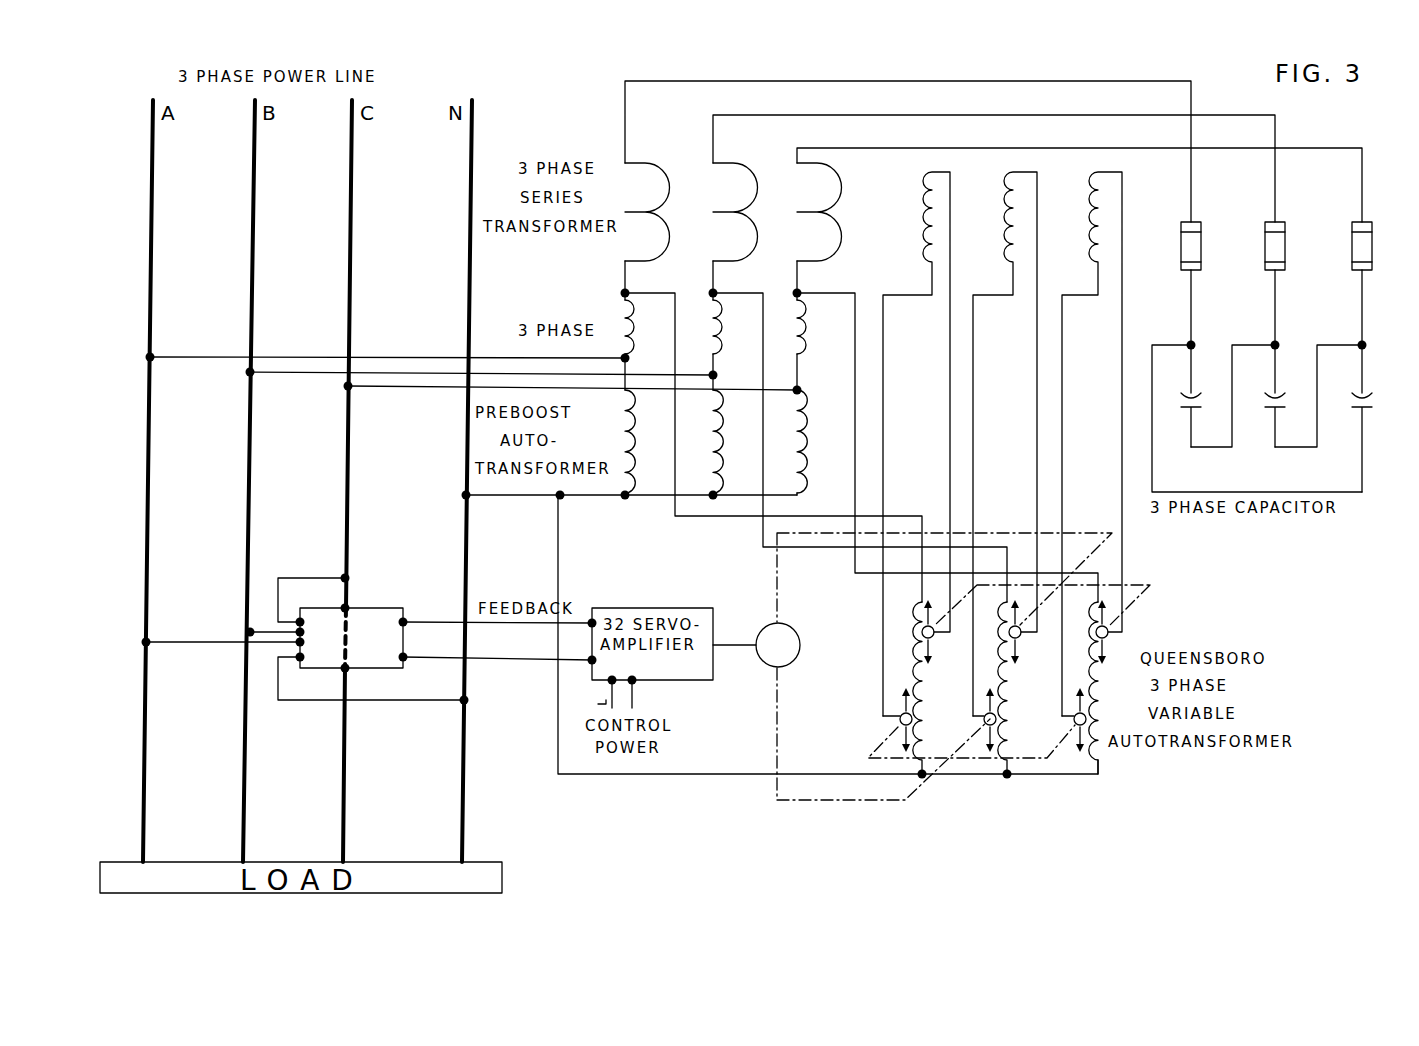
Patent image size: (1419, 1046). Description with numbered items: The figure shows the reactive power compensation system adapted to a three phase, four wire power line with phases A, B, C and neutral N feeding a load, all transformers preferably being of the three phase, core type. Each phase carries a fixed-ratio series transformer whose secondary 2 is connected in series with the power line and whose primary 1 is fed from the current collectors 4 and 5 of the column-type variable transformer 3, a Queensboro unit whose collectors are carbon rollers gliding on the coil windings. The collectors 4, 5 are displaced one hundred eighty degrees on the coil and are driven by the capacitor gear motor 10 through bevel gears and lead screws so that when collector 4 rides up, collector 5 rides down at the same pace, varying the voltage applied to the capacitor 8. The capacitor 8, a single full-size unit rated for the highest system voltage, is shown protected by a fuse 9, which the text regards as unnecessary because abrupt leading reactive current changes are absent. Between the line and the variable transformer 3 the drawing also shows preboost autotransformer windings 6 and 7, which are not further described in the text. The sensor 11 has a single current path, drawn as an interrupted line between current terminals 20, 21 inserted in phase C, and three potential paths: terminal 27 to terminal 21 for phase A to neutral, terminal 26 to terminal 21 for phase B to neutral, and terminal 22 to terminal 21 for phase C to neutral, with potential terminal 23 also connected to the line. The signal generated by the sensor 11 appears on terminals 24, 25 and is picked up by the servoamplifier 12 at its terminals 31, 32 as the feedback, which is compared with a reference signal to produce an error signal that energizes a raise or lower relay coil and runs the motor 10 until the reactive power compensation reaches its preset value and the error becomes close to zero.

The primary 1 is at (1002, 444).
The secondary 2 is at (737, 212).
The variable transformer 3 is at (992, 688).
The current collector 4 is at (1021, 632).
The current collector 5 is at (980, 720).
The preboost autotransformer winding 6 is at (704, 441).
The preboost autotransformer boost winding 7 is at (704, 327).
The capacitor 8 is at (1262, 417).
The fuse 9 is at (1281, 283).
The motor 10 is at (763, 650).
The sensor 11 is at (357, 651).
The servoamplifier 12 is at (630, 693).
The current terminal 20 is at (356, 593).
The current terminal 21 is at (355, 663).
The potential terminal 22 is at (373, 677).
The potential terminal 23 is at (311, 603).
The sensor output terminal 24 is at (413, 616).
The sensor output terminal 25 is at (413, 651).
The potential terminal 26 is at (285, 632).
The potential terminal 27 is at (233, 643).
The servoamplifier terminal 31 is at (511, 661).
The servoamplifier terminal 32 is at (511, 625).